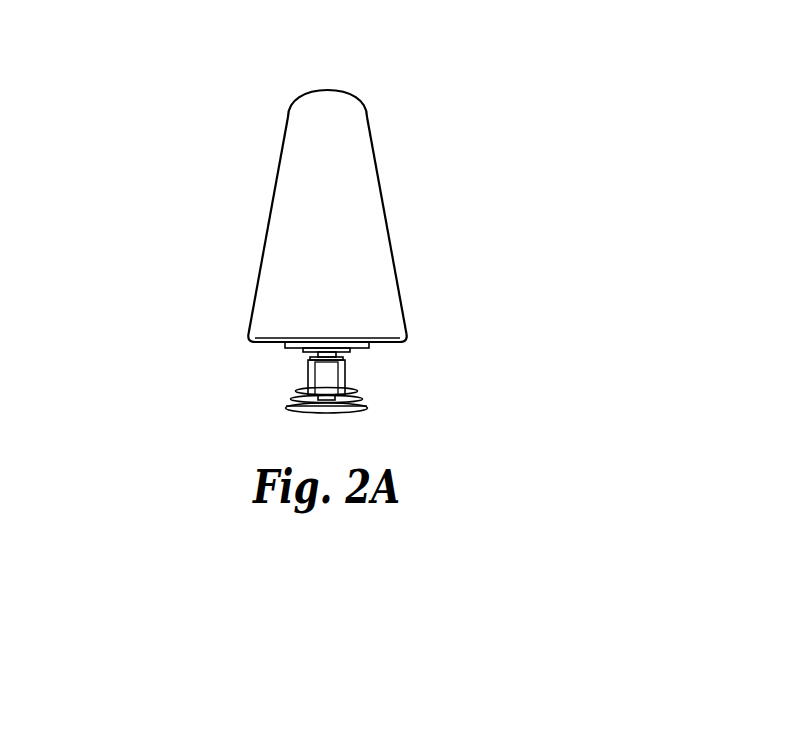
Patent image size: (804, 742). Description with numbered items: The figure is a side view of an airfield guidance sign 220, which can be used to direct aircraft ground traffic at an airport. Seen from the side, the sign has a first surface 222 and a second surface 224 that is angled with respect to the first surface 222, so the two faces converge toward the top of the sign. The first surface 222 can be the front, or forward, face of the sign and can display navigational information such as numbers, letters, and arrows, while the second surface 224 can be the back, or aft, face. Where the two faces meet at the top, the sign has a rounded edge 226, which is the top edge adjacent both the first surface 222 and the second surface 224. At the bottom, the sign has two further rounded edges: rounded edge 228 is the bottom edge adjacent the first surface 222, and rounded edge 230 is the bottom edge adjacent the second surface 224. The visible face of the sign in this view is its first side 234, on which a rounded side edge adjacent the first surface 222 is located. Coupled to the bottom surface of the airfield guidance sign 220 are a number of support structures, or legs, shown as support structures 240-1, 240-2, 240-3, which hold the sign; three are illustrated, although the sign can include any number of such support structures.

The airfield guidance sign 220 is at (199, 51).
The first surface 222 is at (379, 179).
The second surface 224 is at (273, 180).
The rounded edge 226 is at (331, 93).
The rounded edge 228 is at (407, 340).
The rounded edge 230 is at (250, 340).
The first side 234 is at (320, 243).
The support structure 240-1 is at (348, 412).
The support structure 240-2 is at (296, 397).
The support structure 240-3 is at (356, 388).